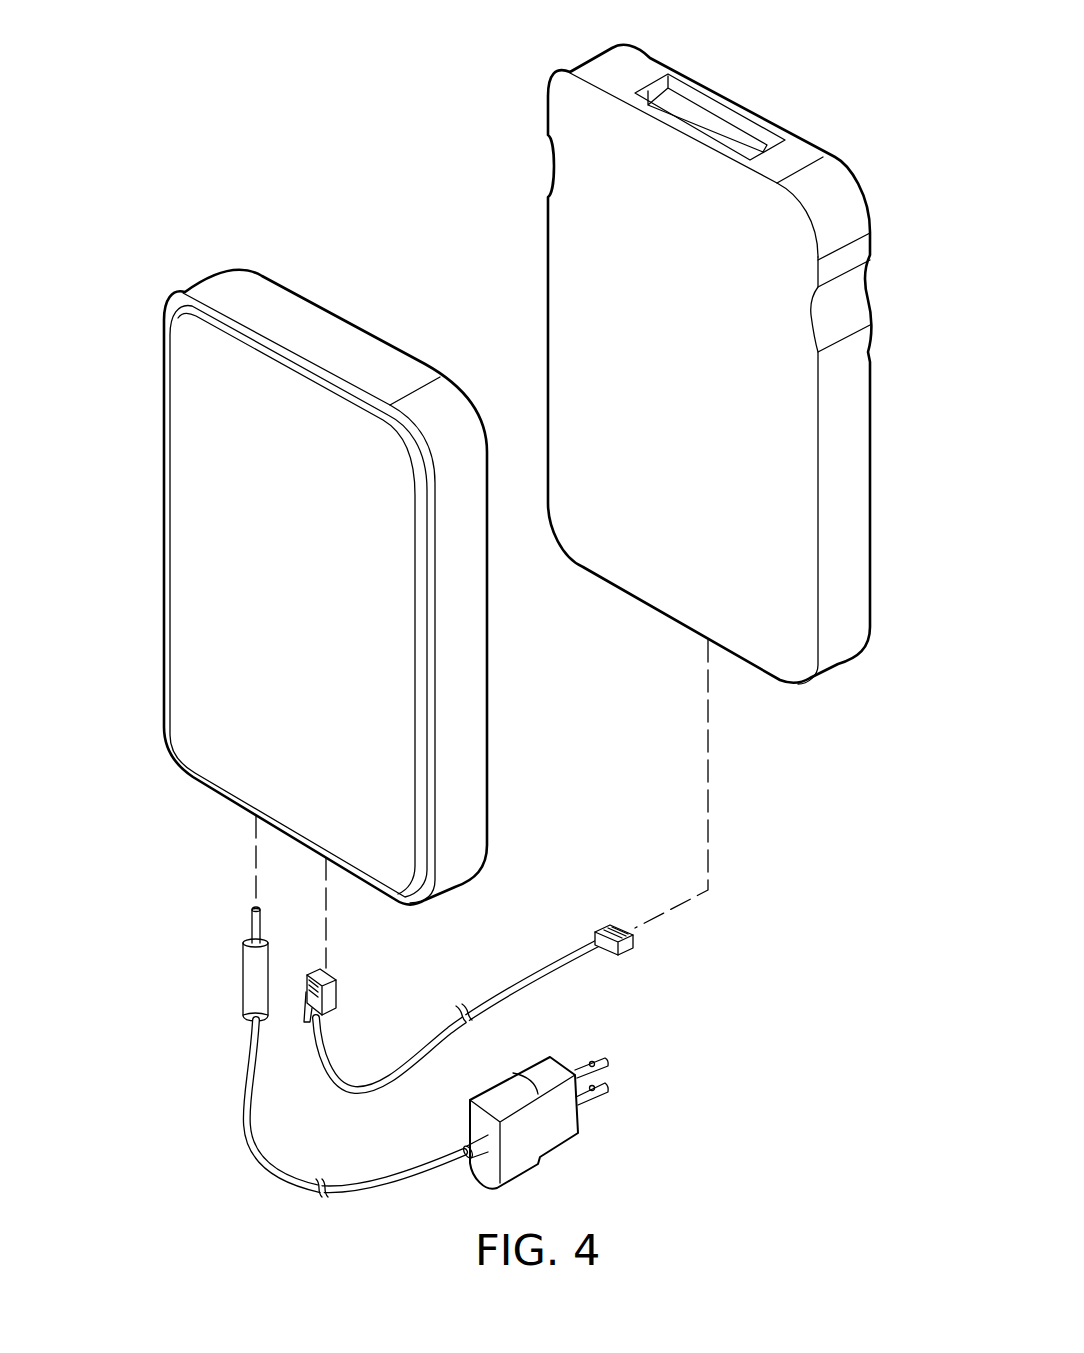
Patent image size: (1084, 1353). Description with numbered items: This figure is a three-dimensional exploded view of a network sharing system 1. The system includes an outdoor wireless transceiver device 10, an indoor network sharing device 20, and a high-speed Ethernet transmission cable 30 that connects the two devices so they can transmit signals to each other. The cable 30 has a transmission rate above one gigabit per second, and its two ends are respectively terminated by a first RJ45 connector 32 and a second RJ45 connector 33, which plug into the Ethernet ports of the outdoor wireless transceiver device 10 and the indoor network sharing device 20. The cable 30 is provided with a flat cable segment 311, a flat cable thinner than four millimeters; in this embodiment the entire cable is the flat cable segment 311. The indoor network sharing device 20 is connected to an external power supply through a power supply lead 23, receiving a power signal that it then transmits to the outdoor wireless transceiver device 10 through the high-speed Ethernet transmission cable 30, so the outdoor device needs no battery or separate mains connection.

The network sharing system 1 is at (250, 116).
The outdoor wireless transceiver device 10 is at (855, 180).
The indoor network sharing device 20 is at (200, 460).
The power supply lead 23 is at (243, 980).
The high-speed Ethernet transmission cable 30 is at (598, 984).
The flat cable segment 311 is at (480, 1010).
The first RJ45 connector 32 is at (617, 927).
The second RJ45 connector 33 is at (337, 993).